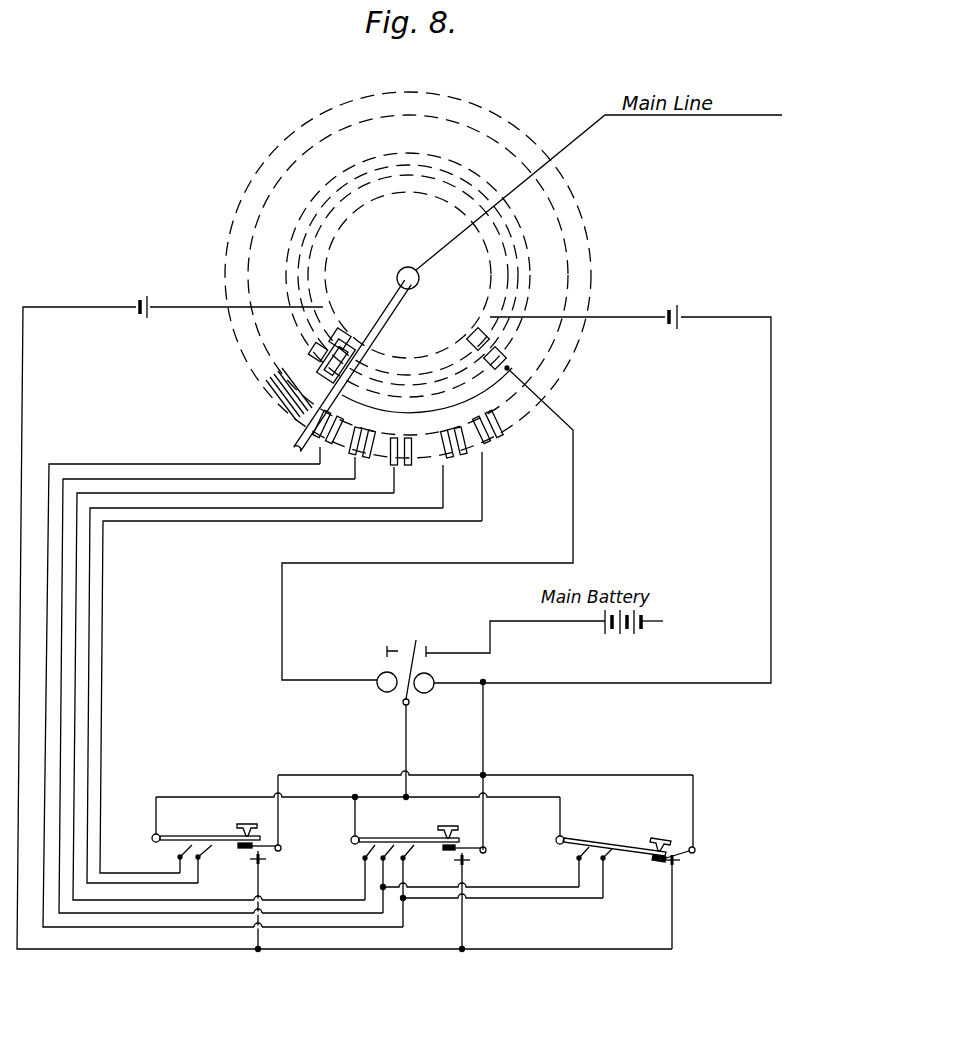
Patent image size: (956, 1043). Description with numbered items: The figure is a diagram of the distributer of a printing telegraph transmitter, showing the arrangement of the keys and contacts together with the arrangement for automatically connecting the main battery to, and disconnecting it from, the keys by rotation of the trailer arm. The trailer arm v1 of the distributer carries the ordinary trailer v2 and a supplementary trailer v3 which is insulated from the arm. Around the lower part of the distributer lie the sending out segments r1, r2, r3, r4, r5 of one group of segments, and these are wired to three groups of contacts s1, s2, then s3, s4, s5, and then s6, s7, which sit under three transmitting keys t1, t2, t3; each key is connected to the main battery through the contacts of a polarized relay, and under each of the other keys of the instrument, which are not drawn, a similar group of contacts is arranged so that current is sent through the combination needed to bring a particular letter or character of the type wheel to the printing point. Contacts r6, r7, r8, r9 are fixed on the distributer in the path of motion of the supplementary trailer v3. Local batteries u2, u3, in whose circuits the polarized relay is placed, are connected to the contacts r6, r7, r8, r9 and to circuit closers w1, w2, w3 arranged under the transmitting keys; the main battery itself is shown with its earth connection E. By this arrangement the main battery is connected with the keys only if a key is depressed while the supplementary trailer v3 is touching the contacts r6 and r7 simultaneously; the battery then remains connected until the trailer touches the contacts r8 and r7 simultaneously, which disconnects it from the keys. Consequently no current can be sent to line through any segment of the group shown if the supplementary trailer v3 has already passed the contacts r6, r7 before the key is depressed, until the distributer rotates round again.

The trailer arm v1 is at (383, 333).
The ordinary trailer v2 is at (296, 402).
The supplementary trailer v3 is at (336, 361).
The sending out segment r1 is at (330, 418).
The sending out segment r2 is at (364, 437).
The sending out segment r3 is at (403, 443).
The sending out segment r4 is at (446, 440).
The sending out segment r5 is at (472, 432).
The contact r6 is at (352, 325).
The contact r7 is at (310, 353).
The contact r8 is at (468, 339).
The contact r9 is at (506, 358).
The local battery u2 is at (156, 302).
The local battery u3 is at (685, 313).
The earth connection E is at (640, 622).
The circuit closer w1 is at (491, 709).
The circuit closer w2 is at (472, 902).
The circuit closer w3 is at (682, 902).
The transmitting key t1 is at (216, 824).
The transmitting key t2 is at (418, 825).
The transmitting key t3 is at (582, 825).
The contact s1 is at (181, 859).
The contact s2 is at (200, 864).
The contact s3 is at (363, 872).
The contact s4 is at (383, 879).
The contact s5 is at (403, 886).
The contact s6 is at (577, 867).
The contact s7 is at (601, 873).